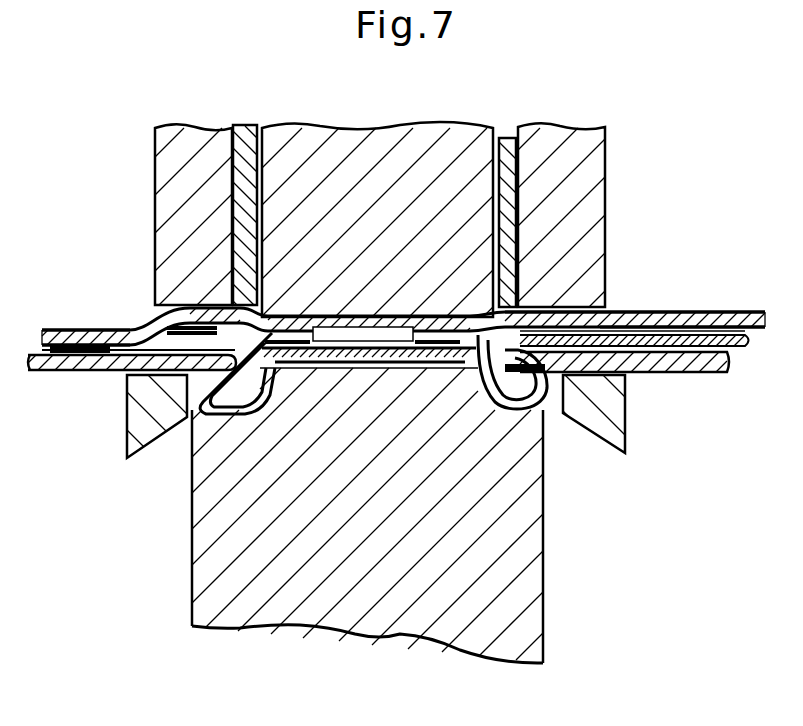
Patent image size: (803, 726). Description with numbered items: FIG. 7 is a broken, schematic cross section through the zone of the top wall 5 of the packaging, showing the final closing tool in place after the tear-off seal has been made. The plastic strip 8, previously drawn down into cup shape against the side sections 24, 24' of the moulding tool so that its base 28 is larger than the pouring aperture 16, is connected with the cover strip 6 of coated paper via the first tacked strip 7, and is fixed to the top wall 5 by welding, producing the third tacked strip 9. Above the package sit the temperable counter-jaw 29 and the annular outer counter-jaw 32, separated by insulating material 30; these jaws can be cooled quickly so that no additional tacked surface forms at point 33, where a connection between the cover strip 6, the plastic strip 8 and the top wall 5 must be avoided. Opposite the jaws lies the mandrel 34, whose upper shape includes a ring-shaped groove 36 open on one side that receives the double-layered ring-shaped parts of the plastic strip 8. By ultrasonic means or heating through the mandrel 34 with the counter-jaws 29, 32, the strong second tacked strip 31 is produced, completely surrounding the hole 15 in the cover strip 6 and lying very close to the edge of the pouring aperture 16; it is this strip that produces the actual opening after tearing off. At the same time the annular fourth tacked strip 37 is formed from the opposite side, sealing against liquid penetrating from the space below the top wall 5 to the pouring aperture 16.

The top wall 5 is at (723, 372).
The cover strip 6 is at (677, 312).
The first tacked strip 7 is at (183, 328).
The plastic strip 8 is at (724, 336).
The third tacked strip 9 is at (70, 345).
The hole 15 is at (332, 317).
The pouring aperture 16 is at (492, 402).
The side section of the moulding tool 24 is at (636, 414).
The side section of the moulding tool 24' is at (126, 416).
The base 28 is at (345, 367).
The counter-jaw 29 is at (370, 177).
The insulating material 30 is at (247, 142).
The second tacked strip 31 is at (449, 317).
The outer counter-jaw 32 is at (180, 152).
The point 33 is at (557, 310).
The mandrel 34 is at (522, 595).
The ring-shaped groove 36 is at (480, 402).
The fourth tacked strip 37 is at (183, 333).